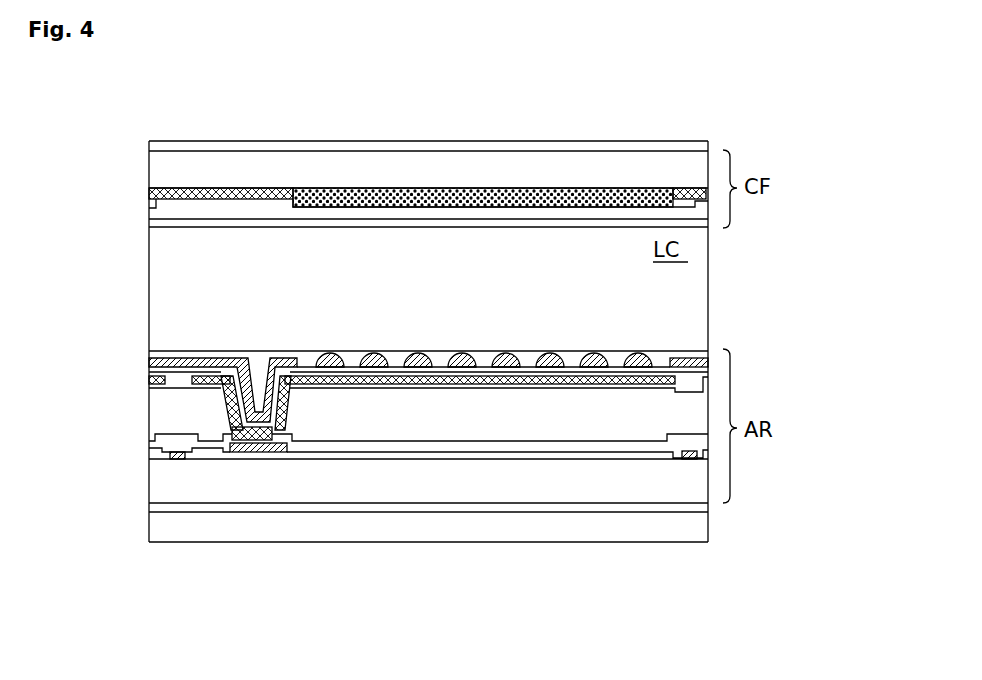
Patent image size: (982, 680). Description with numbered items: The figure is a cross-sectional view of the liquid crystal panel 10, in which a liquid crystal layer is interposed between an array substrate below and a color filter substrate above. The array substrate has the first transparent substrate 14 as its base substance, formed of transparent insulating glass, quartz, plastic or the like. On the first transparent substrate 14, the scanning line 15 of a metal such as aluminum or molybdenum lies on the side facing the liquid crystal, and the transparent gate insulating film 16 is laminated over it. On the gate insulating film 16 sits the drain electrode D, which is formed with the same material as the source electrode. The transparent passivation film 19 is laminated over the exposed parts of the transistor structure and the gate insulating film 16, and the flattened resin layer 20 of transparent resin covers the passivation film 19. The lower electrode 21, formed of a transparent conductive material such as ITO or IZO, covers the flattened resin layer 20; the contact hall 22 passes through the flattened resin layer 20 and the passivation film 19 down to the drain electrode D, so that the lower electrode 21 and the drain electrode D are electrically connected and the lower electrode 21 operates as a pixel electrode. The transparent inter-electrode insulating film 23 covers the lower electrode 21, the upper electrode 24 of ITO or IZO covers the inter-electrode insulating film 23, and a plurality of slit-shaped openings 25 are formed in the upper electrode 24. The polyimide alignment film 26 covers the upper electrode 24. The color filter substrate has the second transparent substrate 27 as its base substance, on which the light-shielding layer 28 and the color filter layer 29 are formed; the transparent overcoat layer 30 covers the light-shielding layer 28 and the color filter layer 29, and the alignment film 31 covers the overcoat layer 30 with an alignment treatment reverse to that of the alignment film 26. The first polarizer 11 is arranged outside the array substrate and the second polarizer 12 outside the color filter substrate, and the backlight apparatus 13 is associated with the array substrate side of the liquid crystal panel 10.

The liquid crystal panel 10 is at (112, 96).
The first polarizer 11 is at (607, 508).
The second polarizer 12 is at (507, 145).
The backlight apparatus 13 is at (490, 528).
The first transparent substrate 14 is at (548, 485).
The scanning line 15 is at (181, 463).
The gate insulating film 16 is at (397, 455).
The passivation film 19 is at (333, 447).
The flattened resin layer 20 is at (578, 417).
The lower electrode 21 is at (434, 378).
The contact hall 22 is at (258, 420).
The inter-electrode insulating film 23 is at (475, 371).
The upper electrode 24 is at (284, 358).
The slit-shaped opening 25 is at (352, 354).
The alignment film 26 is at (521, 352).
The second transparent substrate 27 is at (439, 163).
The light-shielding layer 28 is at (200, 196).
The color filter layer 29 is at (378, 196).
The overcoat layer 30 is at (311, 212).
The alignment film 31 is at (262, 226).
The drain electrode D is at (262, 452).